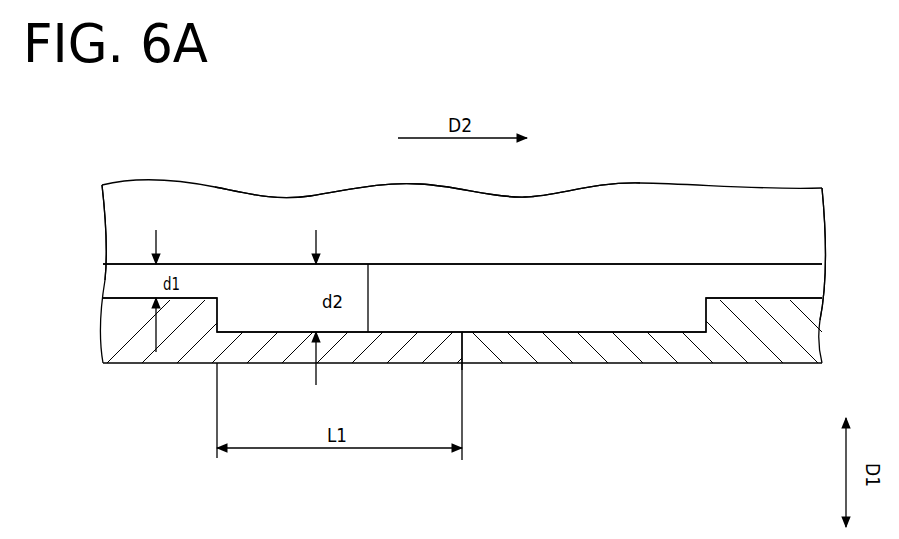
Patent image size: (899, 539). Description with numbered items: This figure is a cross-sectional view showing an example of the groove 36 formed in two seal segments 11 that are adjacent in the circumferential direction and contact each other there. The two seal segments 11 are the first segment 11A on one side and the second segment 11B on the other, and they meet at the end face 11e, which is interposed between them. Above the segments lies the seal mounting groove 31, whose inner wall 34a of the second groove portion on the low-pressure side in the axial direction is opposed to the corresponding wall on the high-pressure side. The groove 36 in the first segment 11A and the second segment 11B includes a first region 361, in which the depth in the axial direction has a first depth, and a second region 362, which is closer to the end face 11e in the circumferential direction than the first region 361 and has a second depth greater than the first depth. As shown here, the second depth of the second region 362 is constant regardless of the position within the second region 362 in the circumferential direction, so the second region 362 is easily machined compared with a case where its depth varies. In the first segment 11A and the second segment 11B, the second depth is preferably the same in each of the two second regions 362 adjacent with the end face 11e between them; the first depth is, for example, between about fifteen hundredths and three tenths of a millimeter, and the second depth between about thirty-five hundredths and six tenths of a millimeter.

The seal segment 11 is at (480, 376).
The first segment 11A is at (113, 368).
The second segment 11B is at (723, 368).
The end face 11e is at (368, 262).
The seal mounting groove 31 is at (503, 237).
The inner wall 34a is at (197, 265).
The groove 36 is at (460, 235).
The first region 361 is at (128, 277).
The second region 362 is at (258, 287).